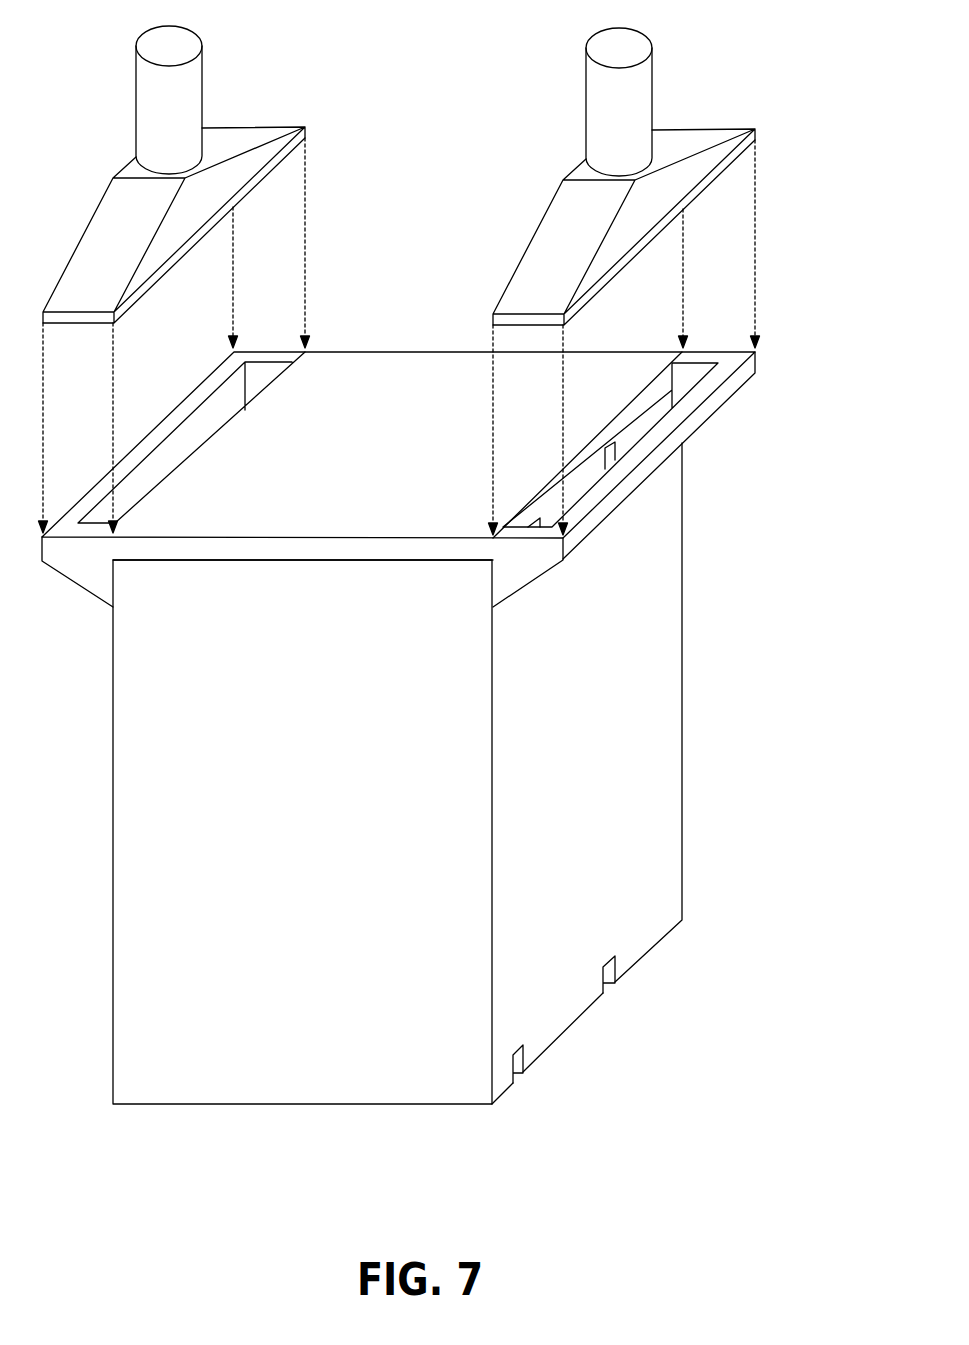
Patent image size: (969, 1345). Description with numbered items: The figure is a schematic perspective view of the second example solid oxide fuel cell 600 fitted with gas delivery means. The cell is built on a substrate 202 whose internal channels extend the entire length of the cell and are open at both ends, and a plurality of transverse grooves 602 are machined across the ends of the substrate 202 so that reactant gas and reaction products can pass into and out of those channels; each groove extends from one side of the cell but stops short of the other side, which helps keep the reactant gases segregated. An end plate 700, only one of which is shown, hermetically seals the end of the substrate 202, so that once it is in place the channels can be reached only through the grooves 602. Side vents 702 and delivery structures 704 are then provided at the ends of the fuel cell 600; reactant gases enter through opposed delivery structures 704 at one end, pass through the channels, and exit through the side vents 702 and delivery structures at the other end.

The solid oxide fuel cell 600 is at (408, 857).
The transverse grooves 602 is at (638, 480).
The end plate 700 is at (335, 379).
The side vent 702 is at (730, 443).
The delivery structure 704 is at (278, 70).
The substrate 202 is at (640, 708).